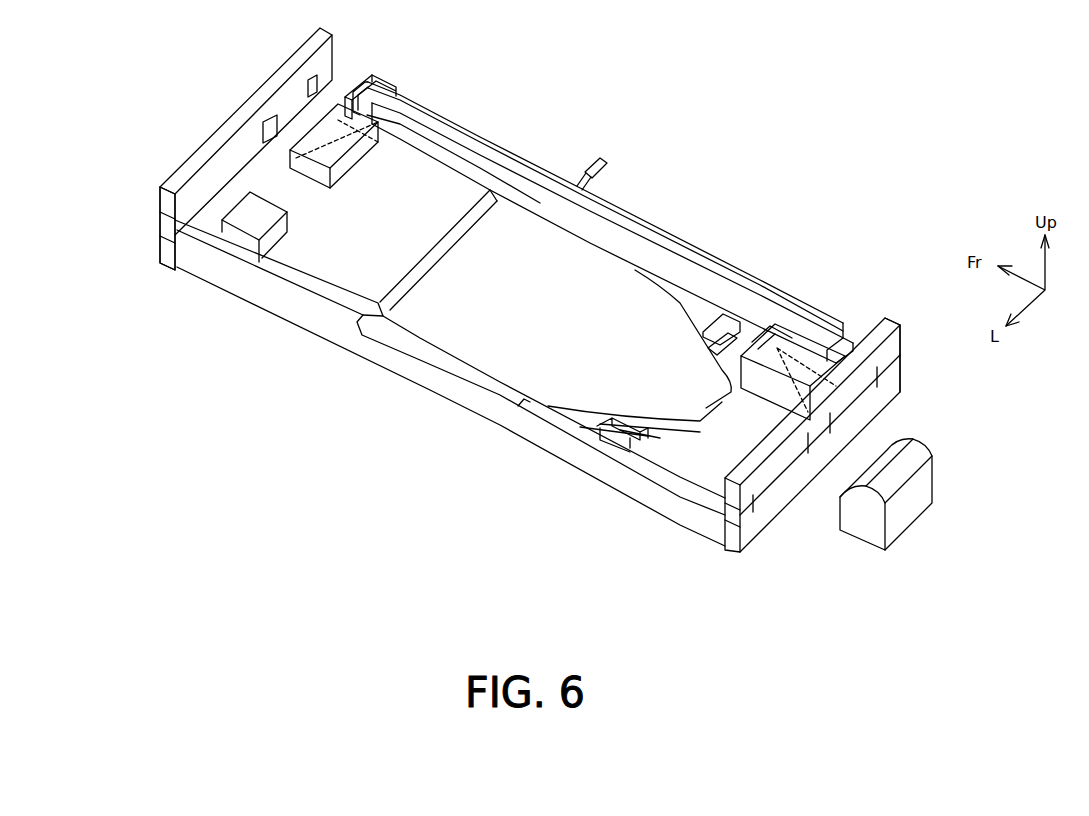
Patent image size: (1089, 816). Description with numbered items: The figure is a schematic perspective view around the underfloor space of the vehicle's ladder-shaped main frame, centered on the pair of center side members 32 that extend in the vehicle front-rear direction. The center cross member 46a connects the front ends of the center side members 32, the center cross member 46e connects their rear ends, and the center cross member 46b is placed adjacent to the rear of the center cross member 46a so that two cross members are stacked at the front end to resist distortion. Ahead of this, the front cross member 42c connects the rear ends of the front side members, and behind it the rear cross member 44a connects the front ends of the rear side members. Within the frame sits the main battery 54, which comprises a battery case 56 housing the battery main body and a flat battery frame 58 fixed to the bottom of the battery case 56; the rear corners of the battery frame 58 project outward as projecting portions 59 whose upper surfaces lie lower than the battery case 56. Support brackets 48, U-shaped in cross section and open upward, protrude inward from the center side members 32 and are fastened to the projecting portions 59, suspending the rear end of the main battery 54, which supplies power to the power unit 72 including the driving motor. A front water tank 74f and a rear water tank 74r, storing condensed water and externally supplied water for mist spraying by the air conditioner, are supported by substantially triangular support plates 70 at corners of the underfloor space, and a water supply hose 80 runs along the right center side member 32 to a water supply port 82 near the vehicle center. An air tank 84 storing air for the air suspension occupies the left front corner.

The center side member 32 is at (260, 288).
The front cross member 42c is at (188, 166).
The rear cross member 44a is at (905, 338).
The center cross member 46a is at (165, 248).
The center cross member 46b is at (270, 148).
The center cross member 46e is at (767, 513).
The support bracket 48 is at (732, 330).
The main battery 54 is at (633, 283).
The battery case 56 is at (493, 195).
The battery frame 58 is at (650, 440).
The projecting portion 59 is at (640, 434).
The support plate 70 is at (327, 122).
The power unit 72 is at (935, 485).
The front water tank 74f is at (363, 118).
The rear water tank 74r is at (773, 337).
The water supply hose 80 is at (527, 162).
The water supply port 82 is at (597, 152).
The air tank 84 is at (245, 223).